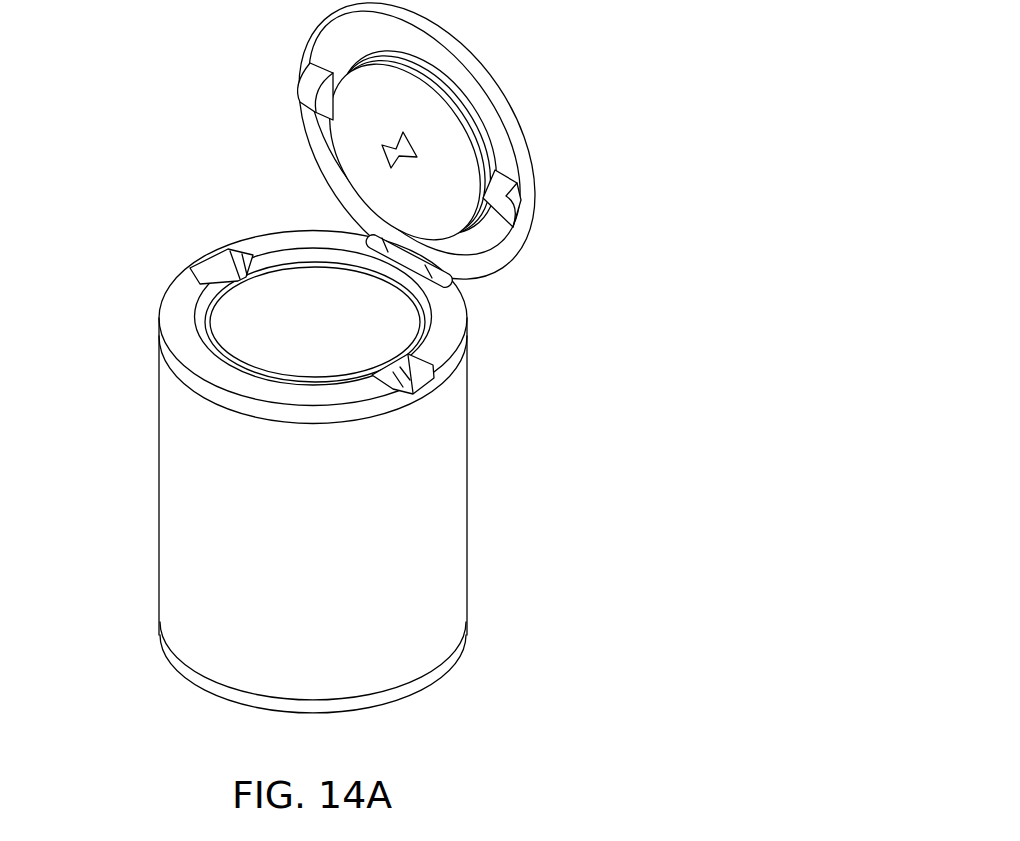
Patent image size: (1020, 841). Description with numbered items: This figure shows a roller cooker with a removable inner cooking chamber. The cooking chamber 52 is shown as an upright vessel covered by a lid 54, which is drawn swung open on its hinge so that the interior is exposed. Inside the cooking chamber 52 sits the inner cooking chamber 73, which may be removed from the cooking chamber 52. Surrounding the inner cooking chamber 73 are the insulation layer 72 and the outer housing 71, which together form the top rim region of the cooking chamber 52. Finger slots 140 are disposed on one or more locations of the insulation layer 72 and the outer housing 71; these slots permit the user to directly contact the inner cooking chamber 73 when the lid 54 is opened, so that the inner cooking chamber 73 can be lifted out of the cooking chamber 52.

The cooking chamber 52 is at (452, 556).
The lid 54 is at (482, 67).
The outer housing 71 is at (280, 233).
The insulation layer 72 is at (217, 257).
The inner cooking chamber 73 is at (417, 322).
The finger slots 140 is at (403, 381).